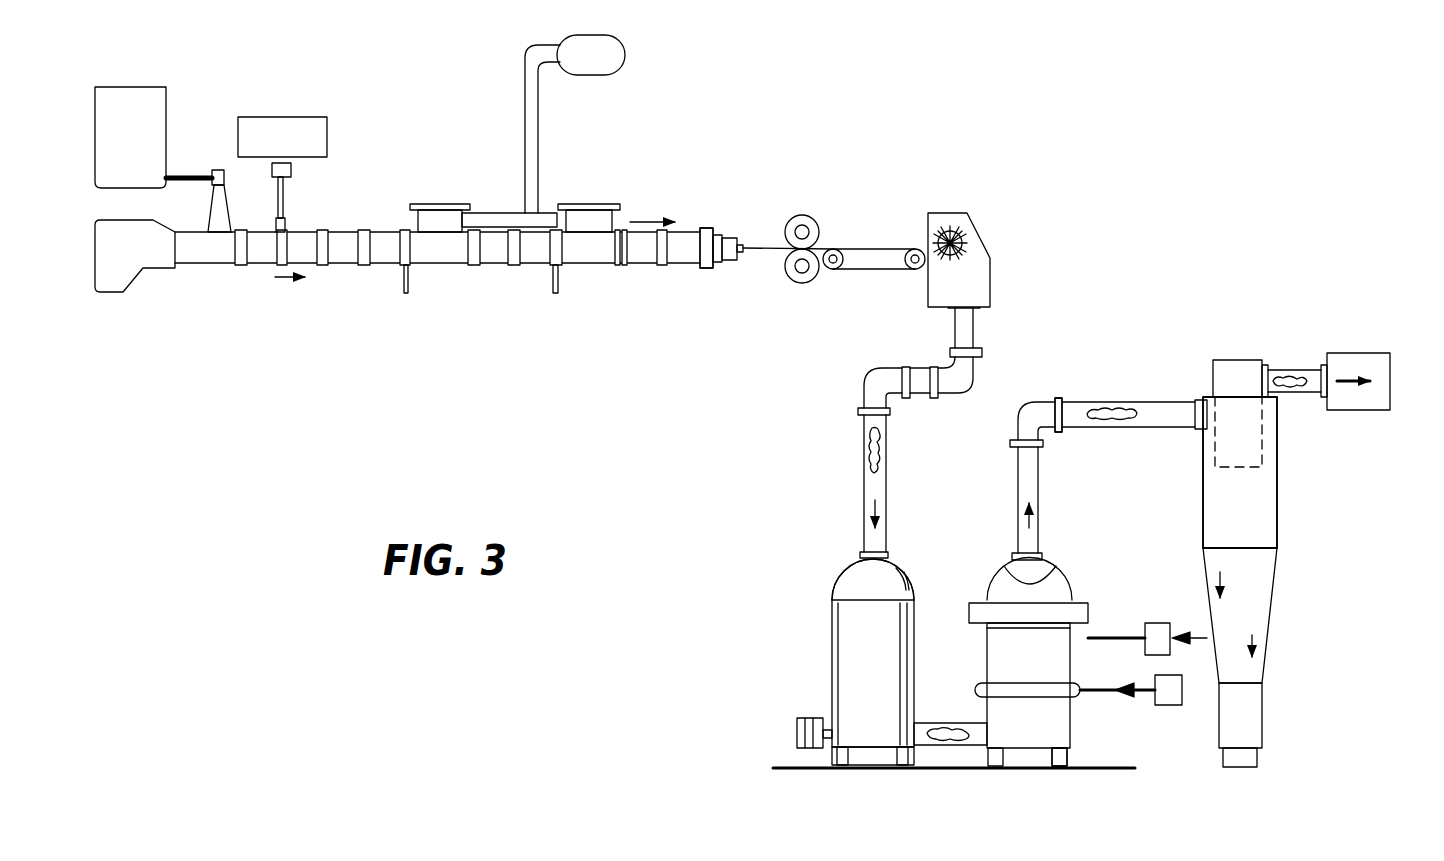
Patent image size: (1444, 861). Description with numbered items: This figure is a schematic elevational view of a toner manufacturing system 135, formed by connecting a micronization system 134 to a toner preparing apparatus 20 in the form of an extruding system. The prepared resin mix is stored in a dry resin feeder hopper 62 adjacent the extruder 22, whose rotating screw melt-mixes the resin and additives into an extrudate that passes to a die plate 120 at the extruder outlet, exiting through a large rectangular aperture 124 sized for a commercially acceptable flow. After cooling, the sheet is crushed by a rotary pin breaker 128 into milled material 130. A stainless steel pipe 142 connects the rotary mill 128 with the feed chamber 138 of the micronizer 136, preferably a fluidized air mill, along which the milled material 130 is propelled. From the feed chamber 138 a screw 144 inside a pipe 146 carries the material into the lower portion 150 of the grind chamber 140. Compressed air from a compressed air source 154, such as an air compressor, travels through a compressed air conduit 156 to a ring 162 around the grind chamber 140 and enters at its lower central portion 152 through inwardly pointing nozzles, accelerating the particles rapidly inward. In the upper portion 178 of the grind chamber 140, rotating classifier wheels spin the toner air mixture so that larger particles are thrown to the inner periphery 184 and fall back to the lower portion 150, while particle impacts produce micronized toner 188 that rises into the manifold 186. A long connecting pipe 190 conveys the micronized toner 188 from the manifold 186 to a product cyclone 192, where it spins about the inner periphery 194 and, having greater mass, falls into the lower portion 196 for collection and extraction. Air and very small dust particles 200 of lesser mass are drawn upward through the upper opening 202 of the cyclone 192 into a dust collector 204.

The toner preparing apparatus 20 is at (422, 78).
The extruder 22 is at (695, 108).
The dry resin feeder hopper 62 is at (152, 100).
The die plate 120 is at (734, 237).
The aperture 124 is at (753, 261).
The rotary pin breaker 128 is at (990, 238).
The milled material 130 is at (885, 458).
The micronization system 134 is at (1045, 360).
The toner manufacturing system 135 is at (1126, 158).
The micronizer 136 is at (828, 558).
The feed chamber 138 is at (845, 655).
The grind chamber 140 is at (988, 658).
The pipe 142 is at (883, 492).
The screw 144 is at (945, 726).
The pipe 146 is at (975, 745).
The lower portion 150 is at (1075, 747).
The lower central portion 152 is at (1072, 725).
The compressed air source 154 is at (1168, 706).
The compressed air conduit 156 is at (1094, 688).
The ring 162 is at (1033, 688).
The upper portion 178 is at (1075, 633).
The inner periphery 184 is at (988, 648).
The manifold 186 is at (990, 598).
The micronized toner 188 is at (1123, 419).
The long connecting pipe 190 is at (1110, 406).
The product cyclone 192 is at (1330, 546).
The inner periphery 194 is at (1270, 512).
The lower portion 196 is at (1262, 733).
The dust particles 200 is at (1290, 375).
The upper opening 202 is at (1213, 396).
The dust collector 204 is at (1362, 360).